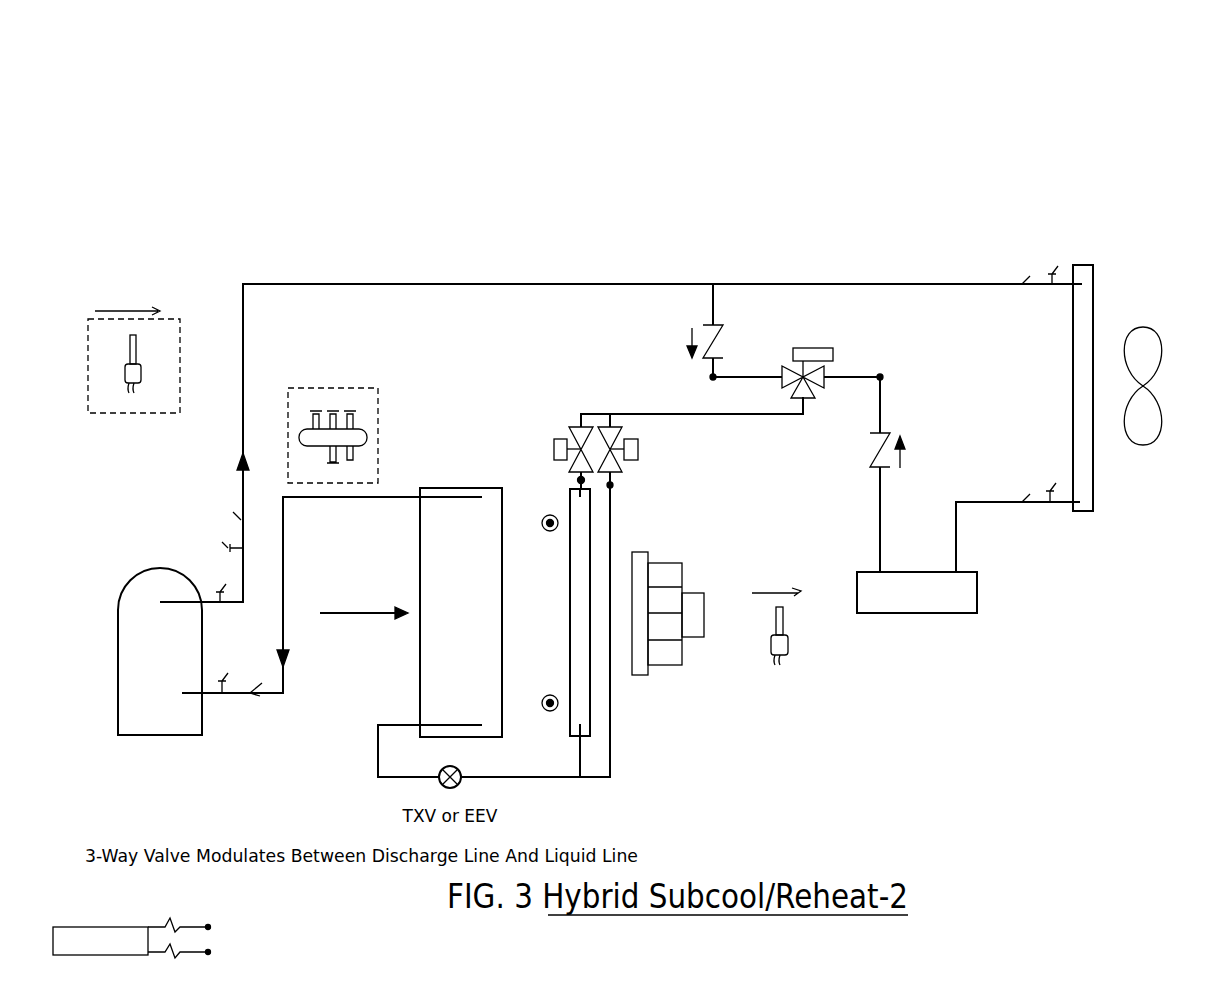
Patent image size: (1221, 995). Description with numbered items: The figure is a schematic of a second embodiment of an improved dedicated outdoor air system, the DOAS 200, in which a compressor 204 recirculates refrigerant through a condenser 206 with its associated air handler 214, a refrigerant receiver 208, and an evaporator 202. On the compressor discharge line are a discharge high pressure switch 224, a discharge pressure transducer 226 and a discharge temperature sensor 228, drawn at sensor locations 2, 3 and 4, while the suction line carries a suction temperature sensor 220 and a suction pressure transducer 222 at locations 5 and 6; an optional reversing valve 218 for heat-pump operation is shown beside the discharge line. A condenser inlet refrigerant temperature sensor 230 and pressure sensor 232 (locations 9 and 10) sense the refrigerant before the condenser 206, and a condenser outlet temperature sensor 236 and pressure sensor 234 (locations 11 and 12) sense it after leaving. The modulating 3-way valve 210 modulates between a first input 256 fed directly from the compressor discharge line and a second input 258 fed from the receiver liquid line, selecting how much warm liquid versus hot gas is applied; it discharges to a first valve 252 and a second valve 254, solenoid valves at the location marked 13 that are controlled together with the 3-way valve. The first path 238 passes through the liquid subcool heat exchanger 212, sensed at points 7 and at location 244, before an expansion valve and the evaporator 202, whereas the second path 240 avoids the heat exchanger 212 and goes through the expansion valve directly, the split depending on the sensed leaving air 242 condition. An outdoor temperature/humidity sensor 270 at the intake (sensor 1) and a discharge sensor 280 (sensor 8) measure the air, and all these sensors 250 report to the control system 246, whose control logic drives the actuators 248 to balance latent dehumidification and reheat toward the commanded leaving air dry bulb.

The DOAS 200 is at (108, 80).
The evaporator 202 is at (440, 680).
The compressor 204 is at (135, 690).
The condenser 206 is at (1082, 300).
The refrigerant receiver 208 is at (977, 613).
The modulating 3-way valve 210 is at (845, 348).
The liquid subcool heat exchanger 212 is at (583, 707).
The air handler 214 is at (1160, 385).
The optional reversing valve 218 is at (378, 388).
The suction temperature sensor 220 is at (252, 695).
The suction pressure transducer 222 is at (222, 693).
The discharge high pressure switch 224 is at (200, 574).
The discharge pressure transducer 226 is at (203, 543).
The discharge temperature sensor 228 is at (216, 506).
The condenser inlet refrigerant temperature sensor 230 is at (1018, 258).
The condenser inlet refrigerant pressure sensor 232 is at (1058, 233).
The condenser outlet refrigerant pressure sensor 234 is at (1050, 505).
The condenser outlet refrigerant temperature sensor 236 is at (1023, 508).
The first path 238 is at (577, 481).
The second path 240 is at (614, 485).
The leaving air 242 is at (448, 452).
The sensor 7 location 244 is at (553, 745).
The control system 246 is at (100, 929).
The actuators 248 is at (199, 927).
The sensors 250 is at (199, 953).
The first valve 252 is at (672, 452).
The second valve 254 is at (535, 434).
The first input 256 is at (725, 338).
The second input 258 is at (883, 377).
The outdoor temperature/humidity sensor 270 is at (88, 413).
The discharge sensor 280 is at (780, 668).
The sensor 1 is at (117, 360).
The sensor 2 is at (213, 591).
The sensor 3 is at (223, 549).
The sensor 4 is at (229, 509).
The sensor 5 is at (221, 672).
The sensor 6 is at (256, 678).
The sensor 7 is at (550, 629).
The sensor 8 is at (787, 637).
The sensor 9 is at (1025, 267).
The sensor 10 is at (1055, 262).
The sensor 11 is at (1027, 486).
The sensor 12 is at (1053, 480).
The solenoid valve 13 is at (595, 449).